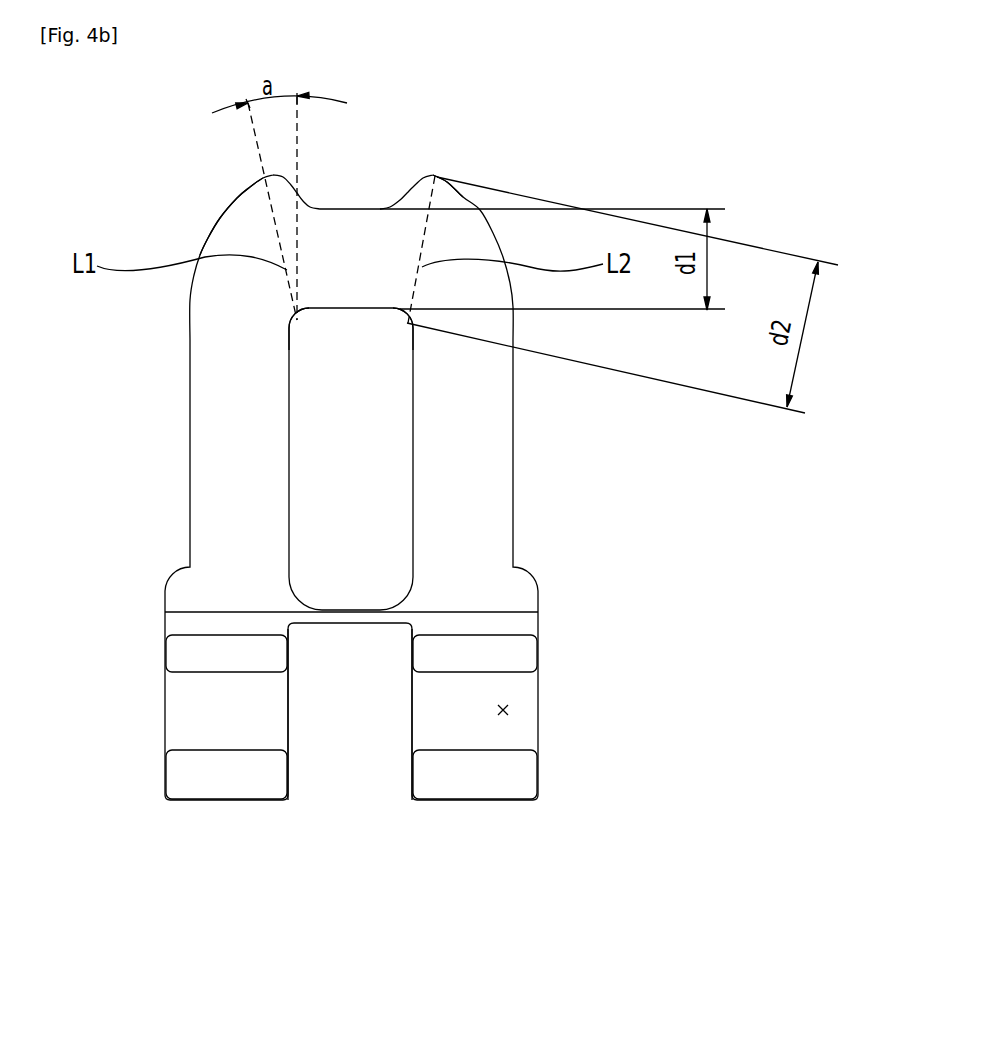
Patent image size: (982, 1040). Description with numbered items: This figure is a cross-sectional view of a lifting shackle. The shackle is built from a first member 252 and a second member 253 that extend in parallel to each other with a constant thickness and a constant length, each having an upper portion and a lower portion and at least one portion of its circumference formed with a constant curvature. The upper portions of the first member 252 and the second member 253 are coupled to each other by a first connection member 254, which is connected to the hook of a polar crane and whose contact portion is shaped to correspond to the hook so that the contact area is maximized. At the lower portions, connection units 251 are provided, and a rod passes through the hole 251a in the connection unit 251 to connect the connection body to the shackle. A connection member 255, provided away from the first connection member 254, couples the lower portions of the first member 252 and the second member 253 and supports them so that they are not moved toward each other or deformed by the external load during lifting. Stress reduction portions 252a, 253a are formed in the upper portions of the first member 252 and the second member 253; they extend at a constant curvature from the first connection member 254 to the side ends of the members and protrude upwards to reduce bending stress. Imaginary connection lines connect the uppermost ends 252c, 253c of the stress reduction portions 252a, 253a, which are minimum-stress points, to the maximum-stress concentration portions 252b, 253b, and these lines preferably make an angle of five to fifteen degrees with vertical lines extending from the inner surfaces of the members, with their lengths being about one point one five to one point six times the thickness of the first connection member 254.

The connection unit 251 is at (530, 653).
The hole 251a is at (508, 710).
The first member 252 is at (202, 452).
The stress reduction portion 252a is at (275, 188).
The maximum-stress concentration portion 252b is at (290, 343).
The uppermost end 252c is at (263, 177).
The second member 253 is at (503, 452).
The stress reduction portion 253a is at (433, 175).
The maximum-stress concentration portion 253b is at (413, 352).
The uppermost end 253c is at (442, 177).
The first connection member 254 is at (360, 212).
The connection member 255 is at (347, 616).